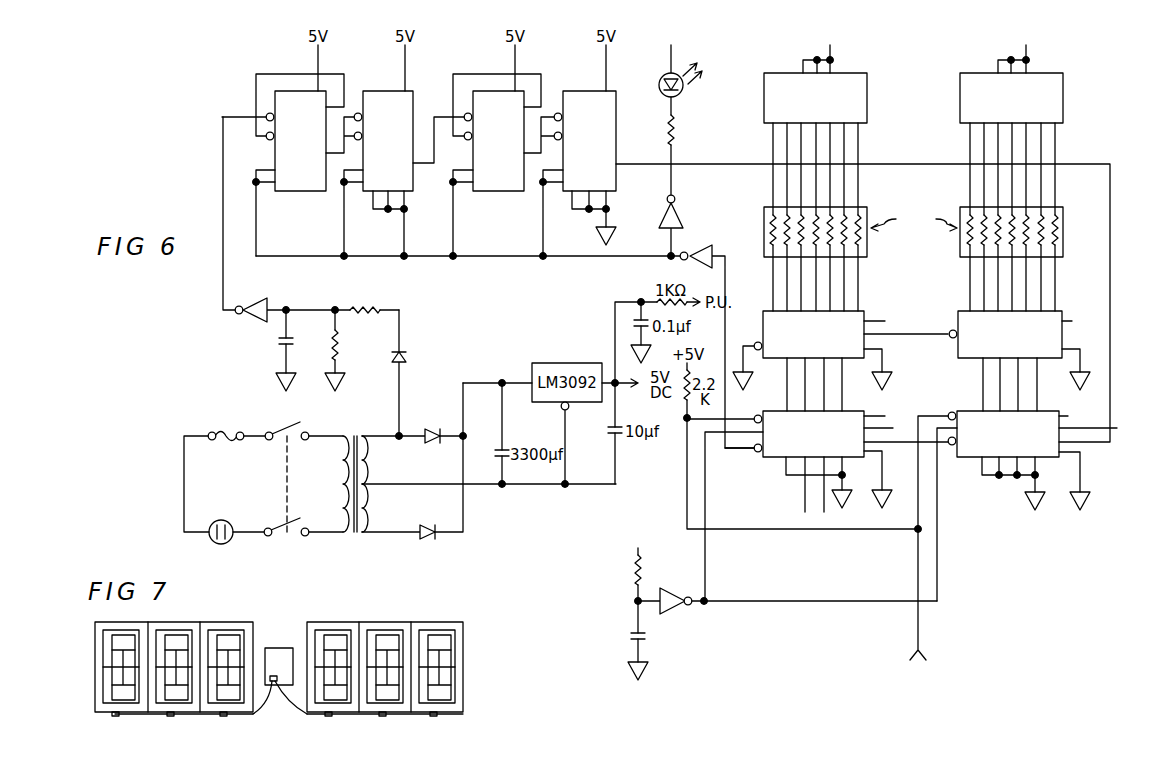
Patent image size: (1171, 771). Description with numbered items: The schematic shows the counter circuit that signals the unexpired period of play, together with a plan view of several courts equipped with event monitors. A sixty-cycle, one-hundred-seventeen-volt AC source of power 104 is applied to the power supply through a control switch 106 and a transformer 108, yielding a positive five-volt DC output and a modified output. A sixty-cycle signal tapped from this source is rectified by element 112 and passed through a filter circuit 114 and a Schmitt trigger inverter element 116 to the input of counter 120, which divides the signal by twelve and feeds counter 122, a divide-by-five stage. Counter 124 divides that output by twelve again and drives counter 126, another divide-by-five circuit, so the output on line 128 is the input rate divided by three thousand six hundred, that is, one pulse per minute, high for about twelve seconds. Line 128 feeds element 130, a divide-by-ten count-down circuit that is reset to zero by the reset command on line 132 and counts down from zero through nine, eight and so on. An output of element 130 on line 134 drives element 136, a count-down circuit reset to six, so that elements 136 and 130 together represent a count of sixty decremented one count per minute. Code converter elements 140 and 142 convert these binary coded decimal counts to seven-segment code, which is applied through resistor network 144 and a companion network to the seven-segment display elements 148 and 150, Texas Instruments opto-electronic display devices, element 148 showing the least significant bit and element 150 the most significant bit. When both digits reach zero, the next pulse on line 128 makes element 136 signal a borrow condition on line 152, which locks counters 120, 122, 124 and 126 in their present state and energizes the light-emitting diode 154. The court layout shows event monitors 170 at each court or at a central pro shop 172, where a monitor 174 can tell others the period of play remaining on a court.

In FIG. 6, the AC source of power 104 is at (232, 541).
In FIG. 6, the control switch 106 is at (290, 427).
In FIG. 6, the transformer 108 is at (355, 432).
In FIG. 6, the rectifier element 112 is at (405, 354).
In FIG. 6, the filter circuit 114 is at (315, 298).
In FIG. 6, the Schmitt trigger inverter element 116 is at (249, 300).
In FIG. 6, the counter 120 is at (300, 91).
In FIG. 6, the counter 122 is at (397, 91).
In FIG. 6, the counter 124 is at (497, 91).
In FIG. 6, the counter 126 is at (590, 91).
In FIG. 6, the line 128 is at (708, 164).
In FIG. 6, the divide by 10 element 130 is at (970, 411).
In FIG. 6, the reset command line 132 is at (696, 604).
In FIG. 6, the line 134 is at (891, 479).
In FIG. 6, the count-down circuit element 136 is at (772, 457).
In FIG. 6, the code converter element 140 is at (1062, 318).
In FIG. 6, the code converter element 142 is at (862, 311).
In FIG. 6, the resistor network 144 is at (1063, 216).
In FIG. 6, the 7-segment display element 148 is at (866, 208).
In FIG. 6, the 7-segment display element 150 is at (866, 73).
In FIG. 6, the borrow line 152 is at (725, 284).
In FIG. 6, the light-emitting diode 154 is at (667, 74).
In FIG. 7, the event monitor 170 is at (118, 716).
In FIG. 7, the pro shop 172 is at (270, 648).
In FIG. 7, the monitor 174 is at (276, 676).